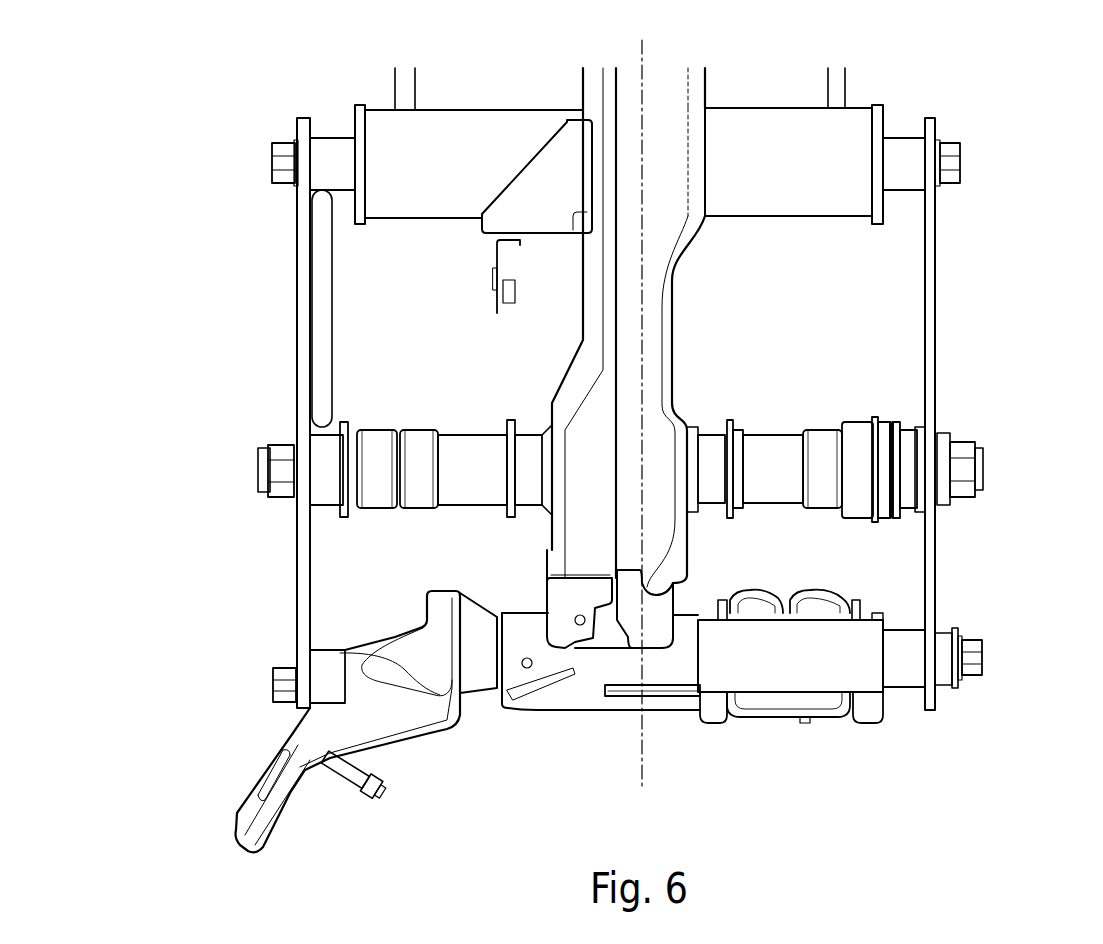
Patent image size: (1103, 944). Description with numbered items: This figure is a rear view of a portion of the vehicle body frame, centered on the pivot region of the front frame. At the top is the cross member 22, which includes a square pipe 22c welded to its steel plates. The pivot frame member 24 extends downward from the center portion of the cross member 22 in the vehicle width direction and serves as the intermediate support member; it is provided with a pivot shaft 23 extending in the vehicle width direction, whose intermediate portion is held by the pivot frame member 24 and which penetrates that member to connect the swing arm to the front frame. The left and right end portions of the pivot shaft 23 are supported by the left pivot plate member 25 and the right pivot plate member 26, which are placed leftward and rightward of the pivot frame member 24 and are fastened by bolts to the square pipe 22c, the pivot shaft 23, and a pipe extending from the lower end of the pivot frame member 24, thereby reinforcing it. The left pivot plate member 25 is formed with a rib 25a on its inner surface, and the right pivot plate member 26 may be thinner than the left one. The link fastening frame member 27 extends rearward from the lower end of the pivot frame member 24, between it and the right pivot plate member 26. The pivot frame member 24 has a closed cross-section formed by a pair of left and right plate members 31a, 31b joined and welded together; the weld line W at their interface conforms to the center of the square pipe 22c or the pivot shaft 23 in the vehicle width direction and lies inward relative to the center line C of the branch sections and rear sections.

The cross member 22 is at (393, 90).
The square pipe 22c is at (832, 200).
The pivot shaft 23 is at (778, 452).
The pivot frame member 24 is at (665, 365).
The left pivot plate member 25 is at (297, 327).
The rib 25a is at (318, 297).
The right pivot plate member 26 is at (932, 358).
The link fastening frame member 27 is at (783, 710).
The left plate member 31a is at (597, 310).
The right plate member 31b is at (665, 310).
The center line C is at (642, 262).
The weld line W is at (613, 532).